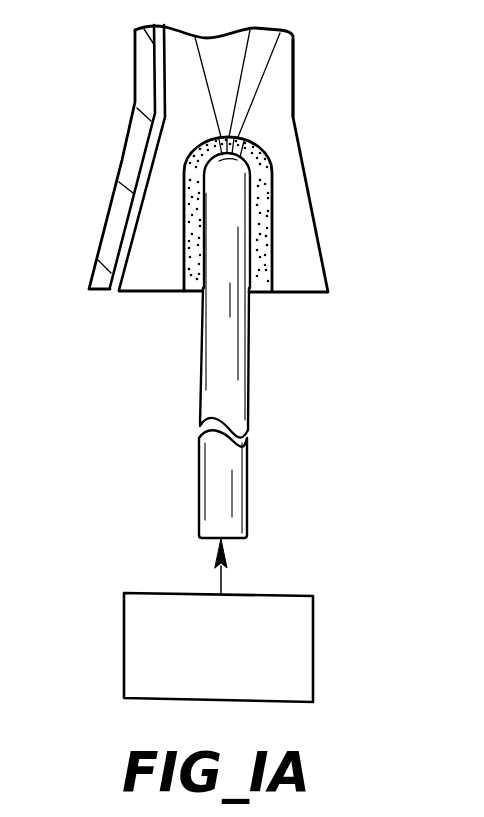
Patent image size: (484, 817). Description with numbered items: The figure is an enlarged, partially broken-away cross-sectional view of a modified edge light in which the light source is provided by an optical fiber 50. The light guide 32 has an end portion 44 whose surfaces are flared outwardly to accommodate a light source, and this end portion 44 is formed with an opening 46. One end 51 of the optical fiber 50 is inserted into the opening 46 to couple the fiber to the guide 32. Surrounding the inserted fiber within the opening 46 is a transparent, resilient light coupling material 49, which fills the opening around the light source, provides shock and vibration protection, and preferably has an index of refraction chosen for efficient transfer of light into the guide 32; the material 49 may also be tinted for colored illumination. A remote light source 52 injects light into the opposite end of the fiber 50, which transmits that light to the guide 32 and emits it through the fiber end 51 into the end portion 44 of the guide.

The light guide 32 is at (297, 75).
The end portion 44 is at (297, 280).
The opening 46 is at (257, 232).
The light coupling material 49 is at (187, 242).
The optical fiber 50 is at (199, 467).
The fiber end 51 is at (196, 138).
The remote light source 52 is at (288, 593).